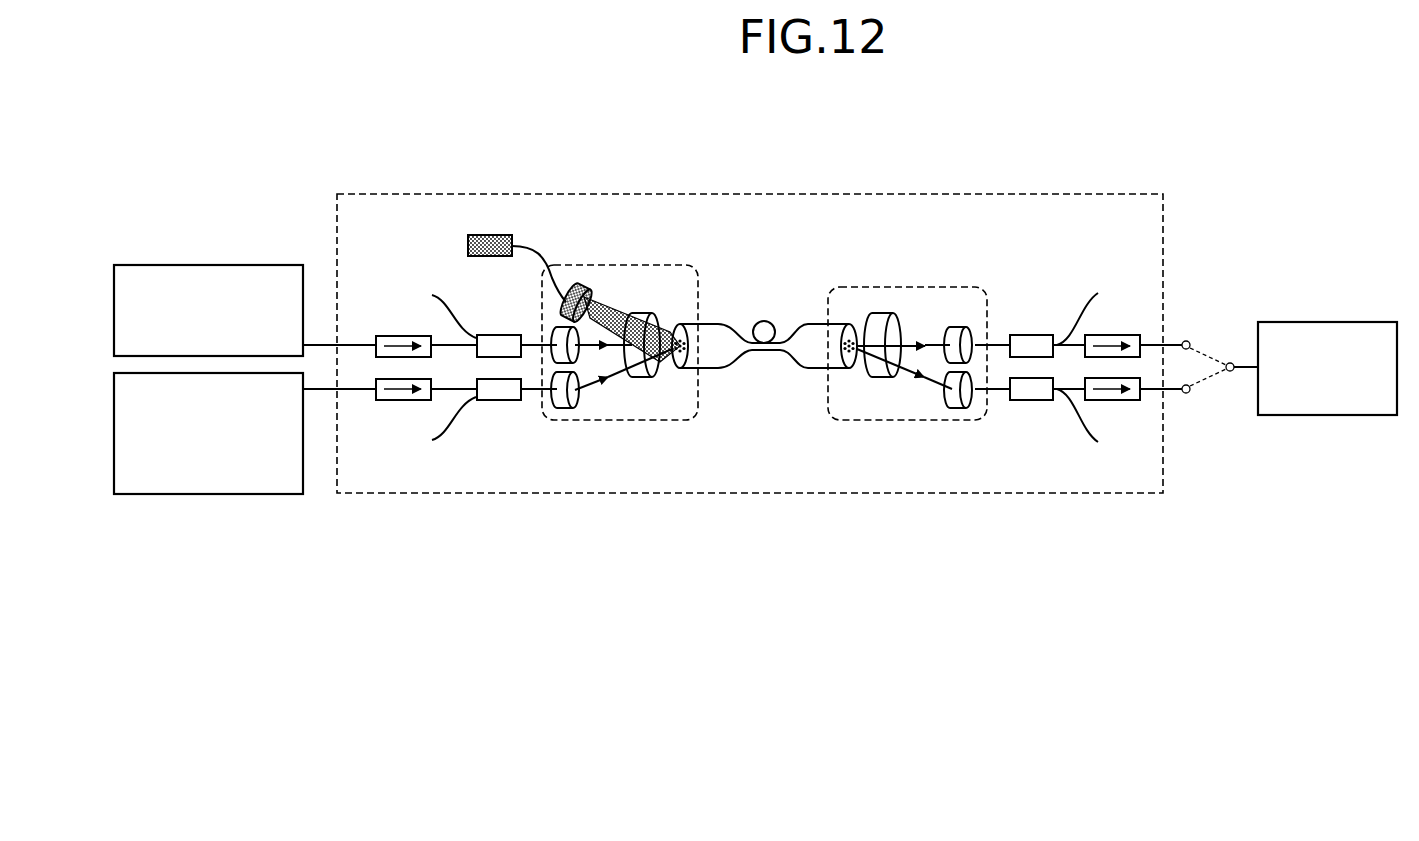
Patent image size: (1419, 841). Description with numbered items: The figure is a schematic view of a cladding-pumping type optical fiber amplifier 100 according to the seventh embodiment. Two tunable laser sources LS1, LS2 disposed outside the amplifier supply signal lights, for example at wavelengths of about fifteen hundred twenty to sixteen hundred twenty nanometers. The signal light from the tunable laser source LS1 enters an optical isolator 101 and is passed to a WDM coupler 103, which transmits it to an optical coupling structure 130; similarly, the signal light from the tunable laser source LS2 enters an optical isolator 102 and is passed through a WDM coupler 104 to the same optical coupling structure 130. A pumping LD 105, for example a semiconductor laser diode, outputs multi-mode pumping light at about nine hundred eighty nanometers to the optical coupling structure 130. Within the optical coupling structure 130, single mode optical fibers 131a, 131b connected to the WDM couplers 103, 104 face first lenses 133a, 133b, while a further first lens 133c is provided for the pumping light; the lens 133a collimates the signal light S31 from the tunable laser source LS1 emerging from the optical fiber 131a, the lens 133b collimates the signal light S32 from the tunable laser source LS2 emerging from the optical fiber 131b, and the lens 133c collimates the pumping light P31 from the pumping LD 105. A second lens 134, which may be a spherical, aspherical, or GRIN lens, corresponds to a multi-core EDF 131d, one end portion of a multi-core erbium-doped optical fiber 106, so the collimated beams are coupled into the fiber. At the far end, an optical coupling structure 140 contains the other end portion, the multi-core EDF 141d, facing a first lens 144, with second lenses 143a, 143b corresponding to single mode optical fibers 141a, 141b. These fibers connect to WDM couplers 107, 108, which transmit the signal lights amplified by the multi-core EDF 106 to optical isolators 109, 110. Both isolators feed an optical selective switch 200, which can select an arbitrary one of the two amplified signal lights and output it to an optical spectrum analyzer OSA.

The optical fiber amplifier 100 is at (1090, 194).
The optical isolator 101 is at (389, 335).
The optical isolator 102 is at (389, 401).
The WDM coupler 103 is at (487, 334).
The WDM coupler 104 is at (488, 401).
The pumping laser diode 105 is at (467, 245).
The multi-core erbium-doped optical fiber 106 is at (806, 312).
The WDM coupler 107 is at (1033, 334).
The WDM coupler 108 is at (1035, 401).
The optical isolator 109 is at (1130, 334).
The optical isolator 110 is at (1130, 401).
The optical coupling structure 130 is at (700, 388).
The optical fiber 131a is at (562, 365).
The optical fiber 131b is at (565, 409).
The multi-core EDF 131d is at (690, 328).
The lens 133a is at (582, 350).
The lens 133b is at (582, 393).
The lens 133c is at (590, 298).
The lens 134 is at (648, 316).
The optical coupling structure 140 is at (828, 416).
The optical fiber 141a is at (993, 342).
The optical fiber 141b is at (992, 393).
The multi-core EDF 141d is at (840, 326).
The lens 143a is at (961, 325).
The lens 143b is at (960, 409).
The lens 144 is at (885, 312).
The optical selective switch 200 is at (1201, 312).
The signal light S31 is at (590, 335).
The signal light S32 is at (622, 376).
The pumping light P31 is at (620, 324).
The tunable laser source LS1 is at (212, 264).
The tunable laser source LS2 is at (213, 495).
The optical spectrum analyzer OSA is at (1327, 321).